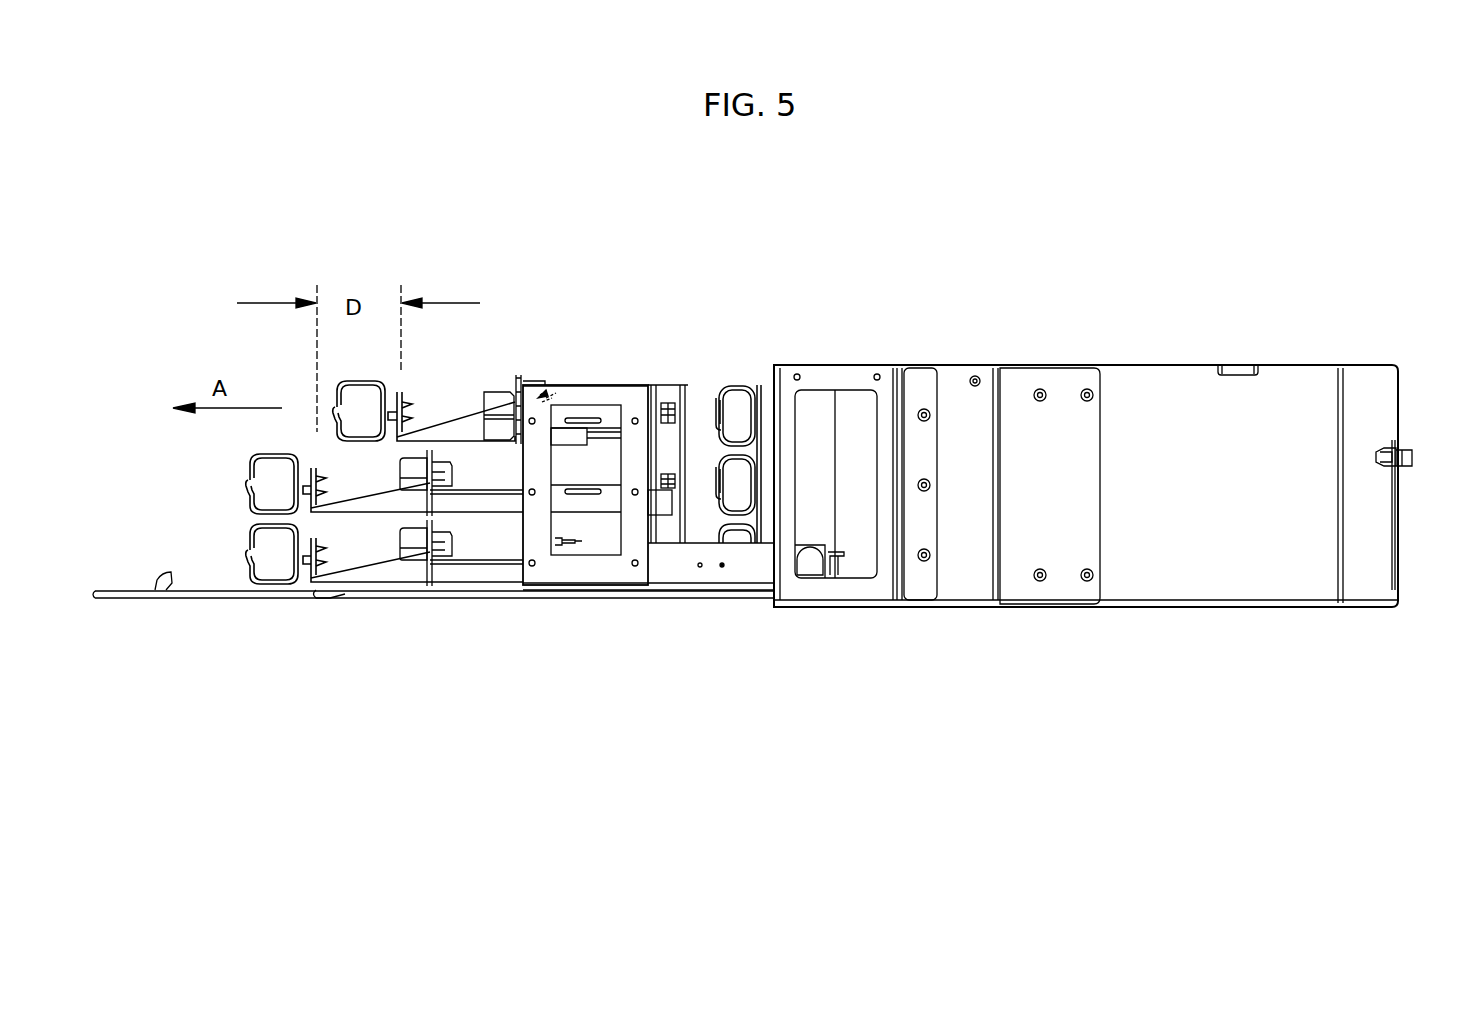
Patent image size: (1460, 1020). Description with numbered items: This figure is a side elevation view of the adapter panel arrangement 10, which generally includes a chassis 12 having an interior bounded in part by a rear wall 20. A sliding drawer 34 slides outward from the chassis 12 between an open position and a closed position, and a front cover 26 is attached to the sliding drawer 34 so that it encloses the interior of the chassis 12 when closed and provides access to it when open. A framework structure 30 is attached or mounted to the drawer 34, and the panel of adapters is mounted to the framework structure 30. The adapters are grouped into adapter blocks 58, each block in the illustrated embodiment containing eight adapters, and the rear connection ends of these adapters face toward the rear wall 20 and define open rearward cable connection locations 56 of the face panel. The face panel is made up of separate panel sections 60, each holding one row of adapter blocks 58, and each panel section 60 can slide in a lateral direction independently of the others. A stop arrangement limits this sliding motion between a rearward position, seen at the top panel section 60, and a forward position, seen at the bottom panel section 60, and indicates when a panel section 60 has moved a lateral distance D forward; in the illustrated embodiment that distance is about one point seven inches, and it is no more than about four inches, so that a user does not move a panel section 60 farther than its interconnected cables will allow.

The adapter panel arrangement 10 is at (830, 308).
The chassis 12 is at (1072, 352).
The rear wall 20 is at (1400, 396).
The front cover 26 is at (190, 596).
The framework structure 30 is at (673, 566).
The sliding drawer 34 is at (578, 592).
The rearward cable connection locations 56 is at (566, 390).
The adapter block 58 is at (498, 396).
The panel section 60 is at (519, 376).